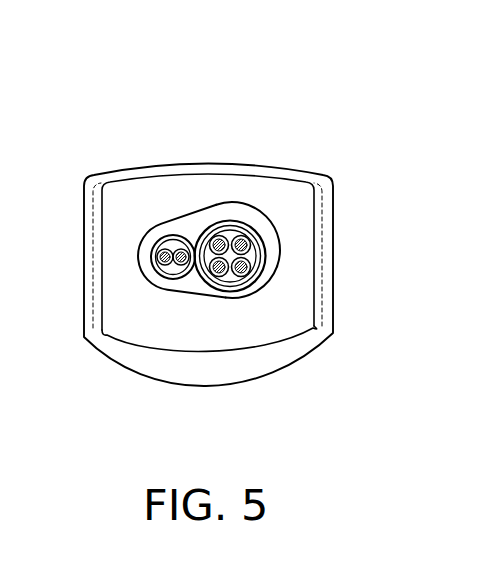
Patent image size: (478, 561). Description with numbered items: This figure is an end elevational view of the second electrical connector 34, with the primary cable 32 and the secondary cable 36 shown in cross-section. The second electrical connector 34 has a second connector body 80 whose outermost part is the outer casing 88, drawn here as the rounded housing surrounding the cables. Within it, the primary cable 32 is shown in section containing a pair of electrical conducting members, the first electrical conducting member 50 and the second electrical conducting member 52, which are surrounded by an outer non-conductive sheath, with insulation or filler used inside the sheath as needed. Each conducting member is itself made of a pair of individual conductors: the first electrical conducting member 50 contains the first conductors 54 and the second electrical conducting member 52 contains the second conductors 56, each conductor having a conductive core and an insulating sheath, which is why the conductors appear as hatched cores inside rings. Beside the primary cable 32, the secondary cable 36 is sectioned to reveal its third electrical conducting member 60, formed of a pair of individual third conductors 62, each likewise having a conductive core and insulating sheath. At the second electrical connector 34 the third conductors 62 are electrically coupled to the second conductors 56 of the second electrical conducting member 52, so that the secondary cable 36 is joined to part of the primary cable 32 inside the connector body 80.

The primary cable 32 is at (207, 302).
The second electrical connector 34 is at (301, 113).
The secondary cable 36 is at (143, 278).
The first electrical conducting member 50 is at (262, 285).
The second electrical conducting member 52 is at (236, 293).
The first conductors 54 is at (253, 266).
The second conductors 56 is at (196, 244).
The third electrical conducting member 60 is at (177, 284).
The third conductors 62 is at (176, 236).
The second connector body 80 is at (313, 164).
The outer casing 88 is at (302, 272).